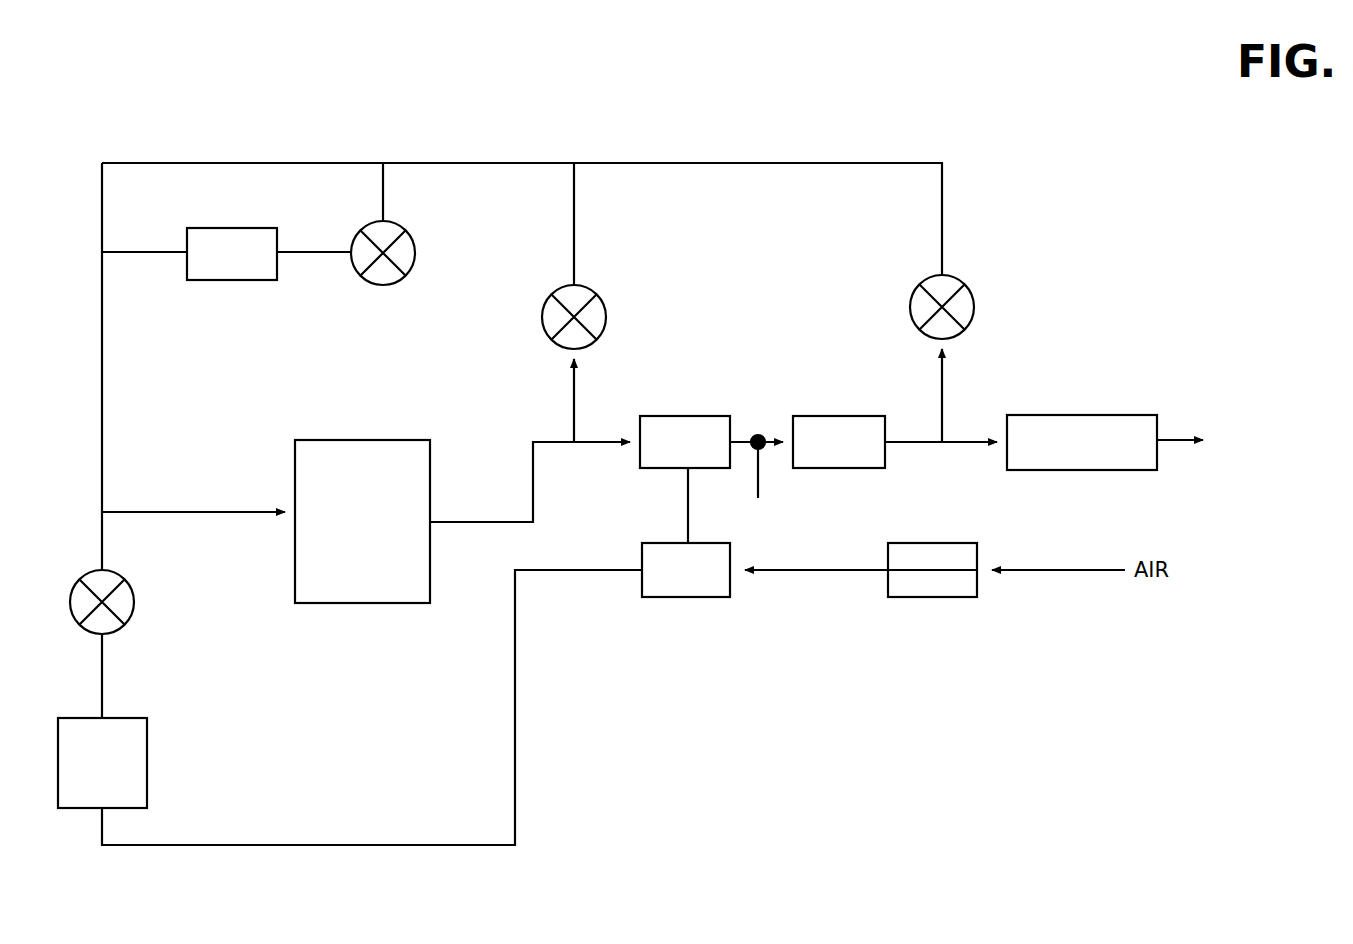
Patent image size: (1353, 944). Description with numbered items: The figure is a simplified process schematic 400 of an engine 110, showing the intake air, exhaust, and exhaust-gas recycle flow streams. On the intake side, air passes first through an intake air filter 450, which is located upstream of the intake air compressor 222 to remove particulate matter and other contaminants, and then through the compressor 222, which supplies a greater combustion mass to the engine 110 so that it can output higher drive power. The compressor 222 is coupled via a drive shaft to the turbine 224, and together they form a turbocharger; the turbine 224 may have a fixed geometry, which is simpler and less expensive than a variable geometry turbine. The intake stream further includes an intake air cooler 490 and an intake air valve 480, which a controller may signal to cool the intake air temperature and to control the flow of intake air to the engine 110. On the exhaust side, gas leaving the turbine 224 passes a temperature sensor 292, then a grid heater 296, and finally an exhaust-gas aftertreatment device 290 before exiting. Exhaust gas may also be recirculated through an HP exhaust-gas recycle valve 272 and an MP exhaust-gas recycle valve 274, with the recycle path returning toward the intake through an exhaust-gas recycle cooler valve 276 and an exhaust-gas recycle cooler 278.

The process schematic 400 is at (1166, 193).
The engine 110 is at (362, 521).
The intake air cooler 490 is at (102, 763).
The intake air valve 480 is at (115, 576).
The exhaust-gas recycle cooler 278 is at (232, 281).
The exhaust-gas recycle cooler valve 276 is at (408, 238).
The HP exhaust-gas recycle valve 272 is at (600, 302).
The MP exhaust-gas recycle valve 274 is at (967, 290).
The turbine 224 is at (672, 416).
The temperature sensor 292 is at (760, 434).
The grid heater 296 is at (828, 416).
The exhaust-gas aftertreatment device 290 is at (1104, 415).
The intake air compressor 222 is at (685, 598).
The intake air filter 450 is at (932, 598).